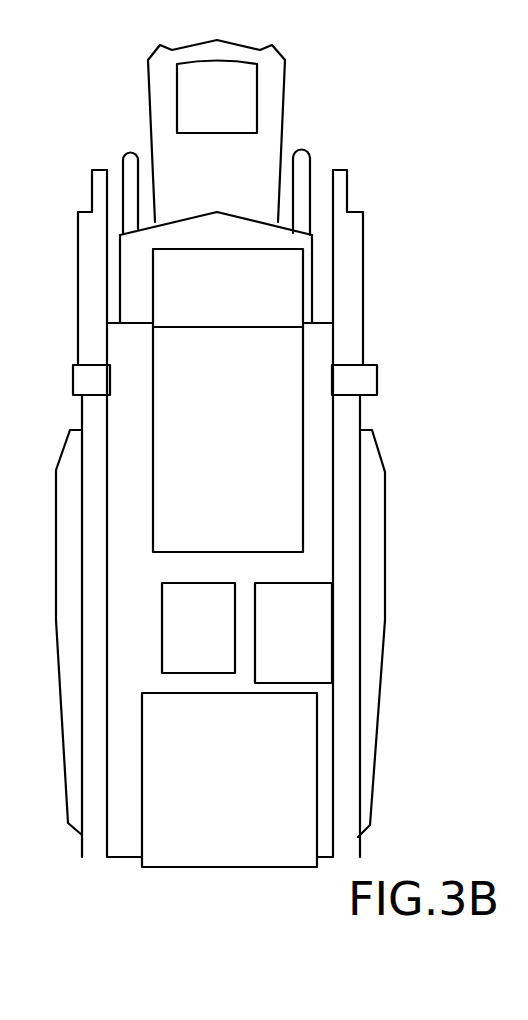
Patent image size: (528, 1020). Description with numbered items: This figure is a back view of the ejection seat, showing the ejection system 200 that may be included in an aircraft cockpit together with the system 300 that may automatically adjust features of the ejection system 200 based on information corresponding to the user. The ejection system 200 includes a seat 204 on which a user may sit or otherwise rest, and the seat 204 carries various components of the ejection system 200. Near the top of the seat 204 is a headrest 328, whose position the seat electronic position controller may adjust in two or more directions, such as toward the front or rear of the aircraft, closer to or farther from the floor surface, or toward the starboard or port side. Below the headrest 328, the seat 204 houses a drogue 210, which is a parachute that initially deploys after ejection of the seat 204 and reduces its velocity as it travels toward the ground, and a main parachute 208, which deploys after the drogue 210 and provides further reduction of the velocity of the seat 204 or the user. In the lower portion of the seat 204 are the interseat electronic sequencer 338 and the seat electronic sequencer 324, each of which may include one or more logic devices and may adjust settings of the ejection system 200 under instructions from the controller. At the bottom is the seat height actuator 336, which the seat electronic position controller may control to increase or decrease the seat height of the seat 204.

The ejection system 200 is at (428, 268).
The seat 204 is at (408, 455).
The main parachute 208 is at (303, 510).
The drogue 210 is at (303, 300).
The system 300 is at (377, 213).
The seat electronic sequencer 324 is at (298, 655).
The headrest 328 is at (177, 157).
The seat height actuator 336 is at (253, 868).
The interseat electronic sequencer 338 is at (173, 633).